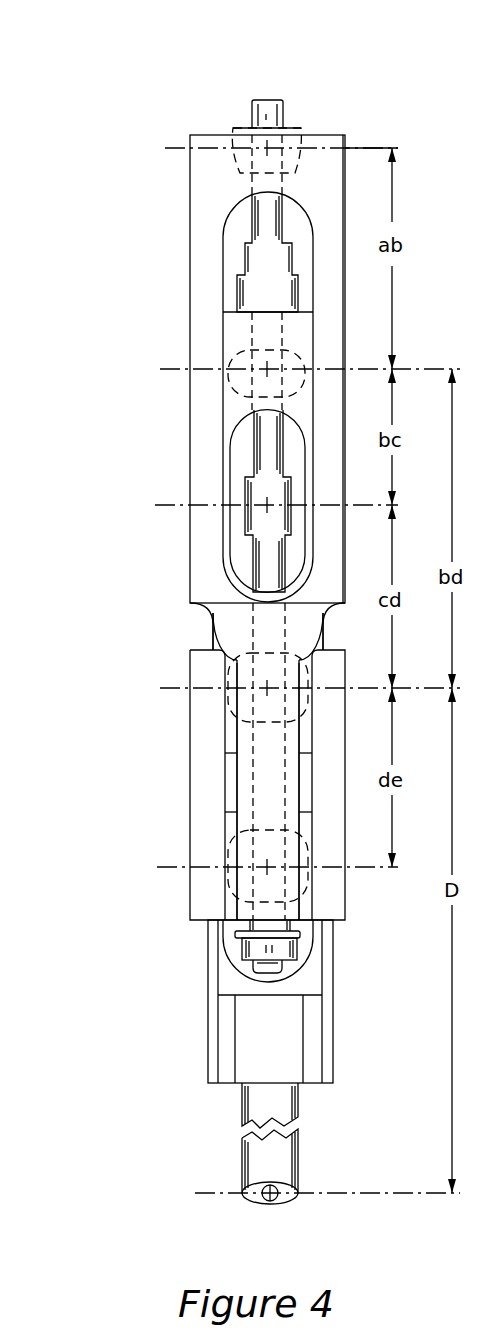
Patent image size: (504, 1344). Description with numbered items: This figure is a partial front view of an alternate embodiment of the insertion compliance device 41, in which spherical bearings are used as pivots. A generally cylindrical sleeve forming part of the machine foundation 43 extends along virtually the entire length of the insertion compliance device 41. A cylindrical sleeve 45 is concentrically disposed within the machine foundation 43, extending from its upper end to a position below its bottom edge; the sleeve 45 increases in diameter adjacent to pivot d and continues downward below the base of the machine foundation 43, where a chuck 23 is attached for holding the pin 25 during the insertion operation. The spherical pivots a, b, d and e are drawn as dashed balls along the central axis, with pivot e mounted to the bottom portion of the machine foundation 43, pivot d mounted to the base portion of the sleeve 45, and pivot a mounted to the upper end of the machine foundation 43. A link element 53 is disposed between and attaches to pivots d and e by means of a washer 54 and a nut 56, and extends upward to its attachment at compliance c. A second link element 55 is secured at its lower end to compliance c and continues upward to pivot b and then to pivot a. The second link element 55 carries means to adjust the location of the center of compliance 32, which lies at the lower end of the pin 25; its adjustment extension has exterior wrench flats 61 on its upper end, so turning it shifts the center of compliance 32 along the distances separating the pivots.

The insertion compliance device 41 is at (209, 78).
The machine foundation 43 is at (331, 135).
The cylindrical sleeve 45 is at (213, 633).
The link element 53 is at (268, 790).
The washer 54 is at (237, 933).
The second link element 55 is at (255, 450).
The nut 56 is at (243, 960).
The exterior wrench flats 61 is at (227, 262).
The chuck 23 is at (208, 1052).
The pin 25 is at (242, 1120).
The center of compliance 32 is at (270, 1205).
The pivot a is at (222, 164).
The pivot b is at (220, 387).
The compliance c is at (237, 520).
The pivot d is at (218, 712).
The pivot e is at (216, 889).